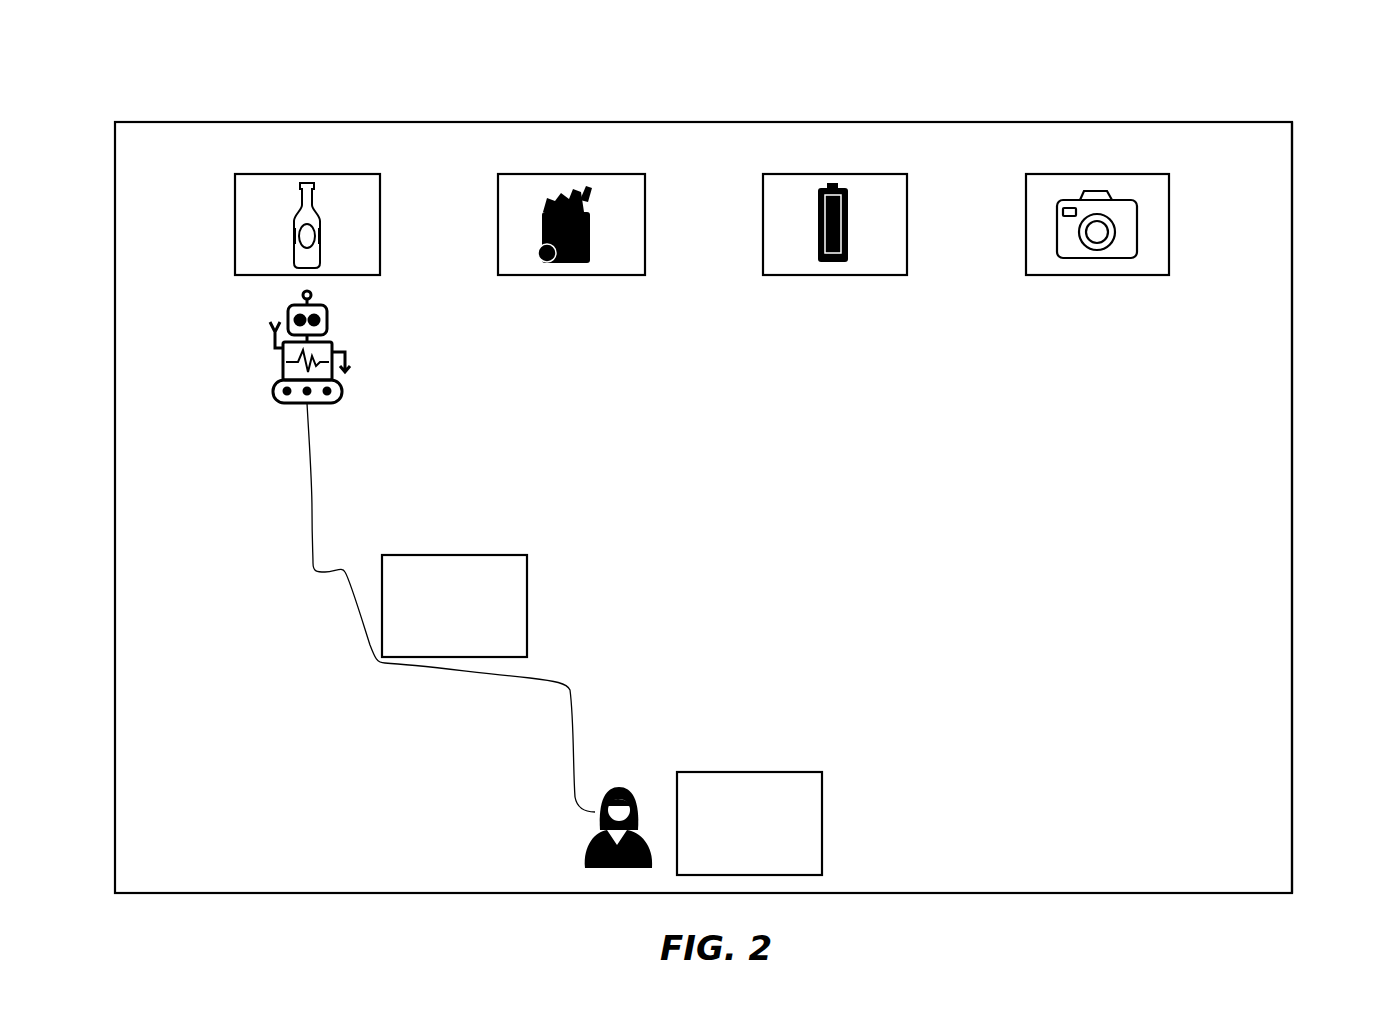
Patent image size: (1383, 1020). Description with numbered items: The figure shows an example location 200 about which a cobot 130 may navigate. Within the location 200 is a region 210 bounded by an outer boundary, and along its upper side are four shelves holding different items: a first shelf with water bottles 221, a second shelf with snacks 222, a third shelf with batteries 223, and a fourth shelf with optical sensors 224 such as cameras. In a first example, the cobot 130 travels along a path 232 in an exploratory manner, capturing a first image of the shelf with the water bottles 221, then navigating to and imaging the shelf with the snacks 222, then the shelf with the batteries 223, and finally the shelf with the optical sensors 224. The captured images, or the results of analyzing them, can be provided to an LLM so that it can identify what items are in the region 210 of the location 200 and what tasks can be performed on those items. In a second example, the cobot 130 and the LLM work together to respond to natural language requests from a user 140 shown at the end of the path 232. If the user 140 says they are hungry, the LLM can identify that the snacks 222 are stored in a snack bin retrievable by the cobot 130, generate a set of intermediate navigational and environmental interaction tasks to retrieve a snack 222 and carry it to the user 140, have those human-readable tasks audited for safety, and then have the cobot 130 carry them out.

The location 200 is at (1313, 85).
The region 210 is at (1293, 625).
The water bottles 221 is at (287, 238).
The snacks 222 is at (550, 192).
The batteries 223 is at (807, 192).
The optical sensors 224 is at (1060, 192).
The cobot 130 is at (270, 343).
The path 232 is at (312, 510).
The user 140 is at (582, 860).